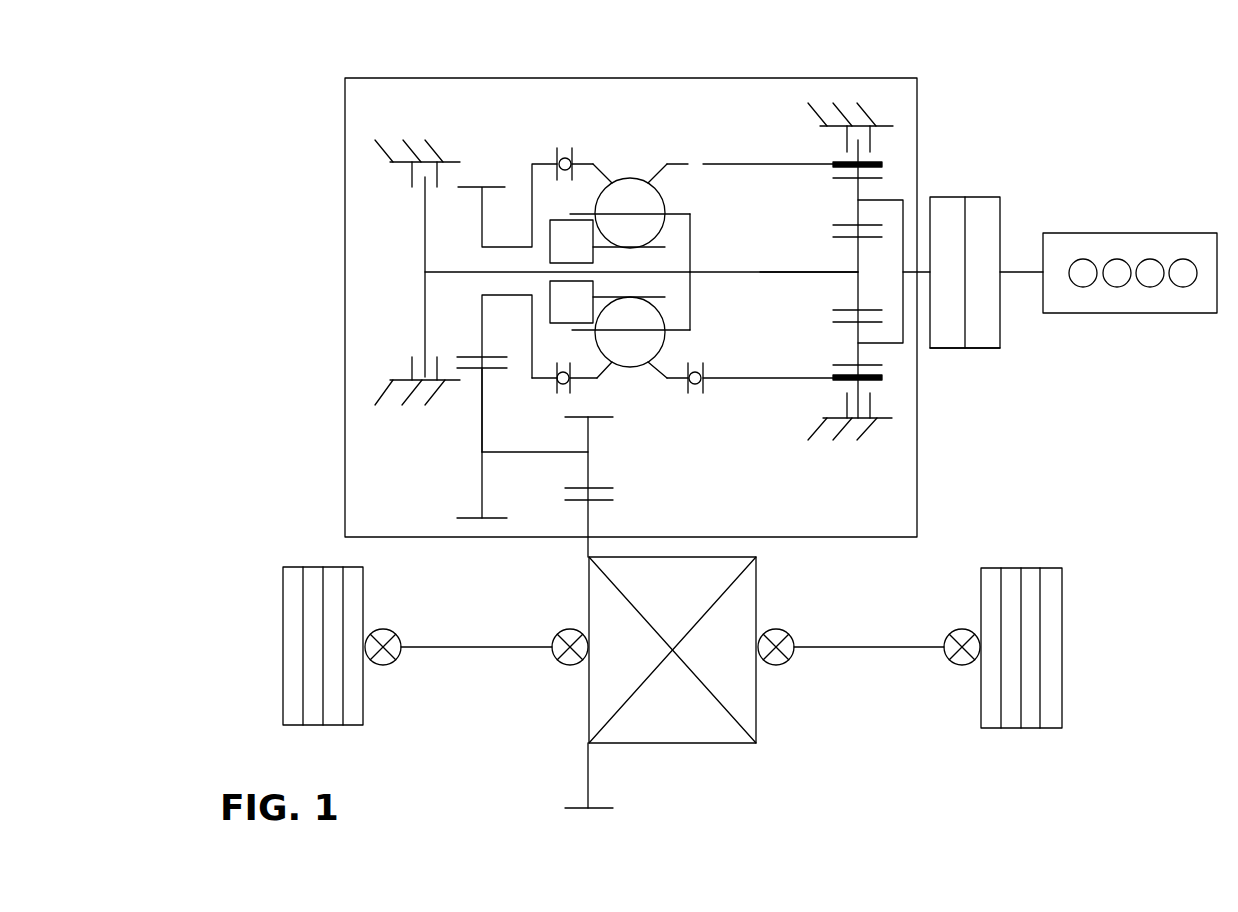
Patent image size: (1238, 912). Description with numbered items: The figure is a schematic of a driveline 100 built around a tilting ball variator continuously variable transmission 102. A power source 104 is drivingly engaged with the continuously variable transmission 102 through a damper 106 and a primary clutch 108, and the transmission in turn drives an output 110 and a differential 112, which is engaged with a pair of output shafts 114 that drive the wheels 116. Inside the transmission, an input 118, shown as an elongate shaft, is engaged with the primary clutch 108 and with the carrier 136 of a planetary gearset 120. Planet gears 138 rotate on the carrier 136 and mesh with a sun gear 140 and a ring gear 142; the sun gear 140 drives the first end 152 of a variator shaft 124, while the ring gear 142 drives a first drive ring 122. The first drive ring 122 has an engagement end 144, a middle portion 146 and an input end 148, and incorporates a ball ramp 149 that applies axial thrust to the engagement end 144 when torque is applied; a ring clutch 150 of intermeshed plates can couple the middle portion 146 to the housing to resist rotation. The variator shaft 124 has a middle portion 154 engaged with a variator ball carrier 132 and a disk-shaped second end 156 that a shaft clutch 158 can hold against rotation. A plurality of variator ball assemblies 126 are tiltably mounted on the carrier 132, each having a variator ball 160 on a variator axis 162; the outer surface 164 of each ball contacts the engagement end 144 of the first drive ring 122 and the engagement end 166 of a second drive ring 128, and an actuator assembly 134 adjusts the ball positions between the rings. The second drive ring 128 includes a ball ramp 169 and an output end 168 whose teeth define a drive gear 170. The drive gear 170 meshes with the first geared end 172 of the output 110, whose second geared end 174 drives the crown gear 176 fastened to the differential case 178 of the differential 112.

The driveline 100 is at (1010, 69).
The continuously variable transmission 102 is at (495, 95).
The power source 104 is at (1128, 233).
The damper 106 is at (985, 197).
The primary clutch 108 is at (948, 348).
The output 110 is at (535, 452).
The differential 112 is at (718, 758).
The output shafts 114 is at (478, 647).
The wheels 116 is at (350, 725).
The input 118 is at (915, 270).
The planetary gearset 120 is at (808, 344).
The first drive ring 122 is at (738, 155).
The variator shaft 124 is at (710, 262).
The variator ball assemblies 126 is at (648, 383).
The second drive ring 128 is at (602, 160).
The variator ball carrier 132 is at (692, 293).
The actuator assembly 134 is at (550, 306).
The carrier 136 is at (900, 288).
The planet gears 138 is at (852, 190).
The sun gear 140 is at (852, 252).
The ring gear 142 is at (882, 378).
The engagement end 144 is at (653, 176).
The middle portion 146 is at (780, 378).
The input end 148 is at (833, 165).
The ball ramp 149 is at (700, 392).
The ring clutch 150 is at (872, 408).
The first end 152 is at (798, 273).
The middle portion 154 is at (672, 268).
The second end 156 is at (425, 330).
The shaft clutch 158 is at (412, 177).
The variator ball 160 is at (631, 168).
The variator axis 162 is at (662, 340).
The outer surface 164 is at (598, 200).
The engagement end 166 is at (602, 374).
The output end 168 is at (482, 332).
The ball ramp 169 is at (557, 388).
The drive gear 170 is at (492, 187).
The first geared end 172 is at (482, 428).
The second geared end 174 is at (590, 470).
The crown gear 176 is at (588, 770).
The differential case 178 is at (757, 561).